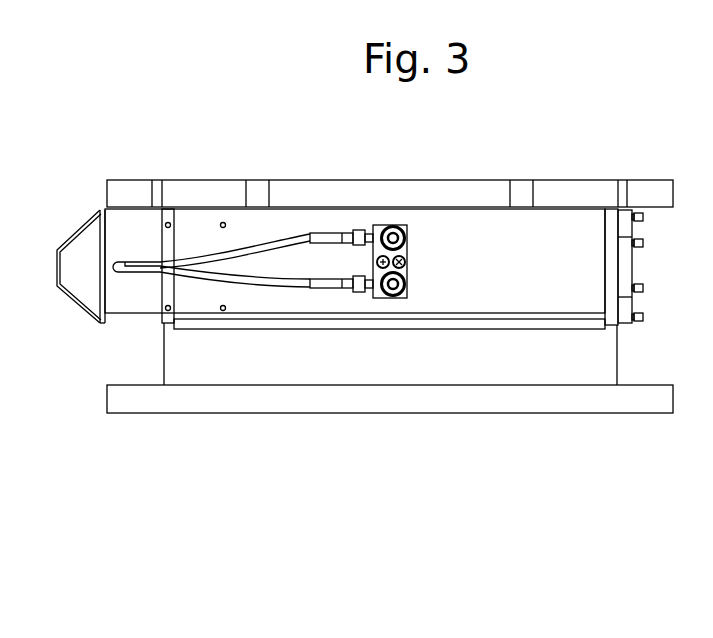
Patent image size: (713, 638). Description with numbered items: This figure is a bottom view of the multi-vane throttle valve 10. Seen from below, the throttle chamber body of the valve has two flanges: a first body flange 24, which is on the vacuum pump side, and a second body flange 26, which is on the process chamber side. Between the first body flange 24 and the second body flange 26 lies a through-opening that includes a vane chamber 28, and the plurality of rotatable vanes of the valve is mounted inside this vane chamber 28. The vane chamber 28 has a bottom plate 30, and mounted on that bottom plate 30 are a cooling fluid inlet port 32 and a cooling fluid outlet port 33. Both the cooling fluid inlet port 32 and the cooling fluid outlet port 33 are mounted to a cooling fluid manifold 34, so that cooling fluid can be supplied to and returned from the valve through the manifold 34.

The multi-vane throttle valve 10 is at (189, 101).
The first body flange 24 is at (107, 397).
The second body flange 26 is at (107, 192).
The vane chamber 28 is at (632, 268).
The bottom plate 30 is at (523, 277).
The cooling fluid inlet port 32 is at (367, 293).
The cooling fluid outlet port 33 is at (370, 230).
The cooling fluid manifold 34 is at (408, 270).